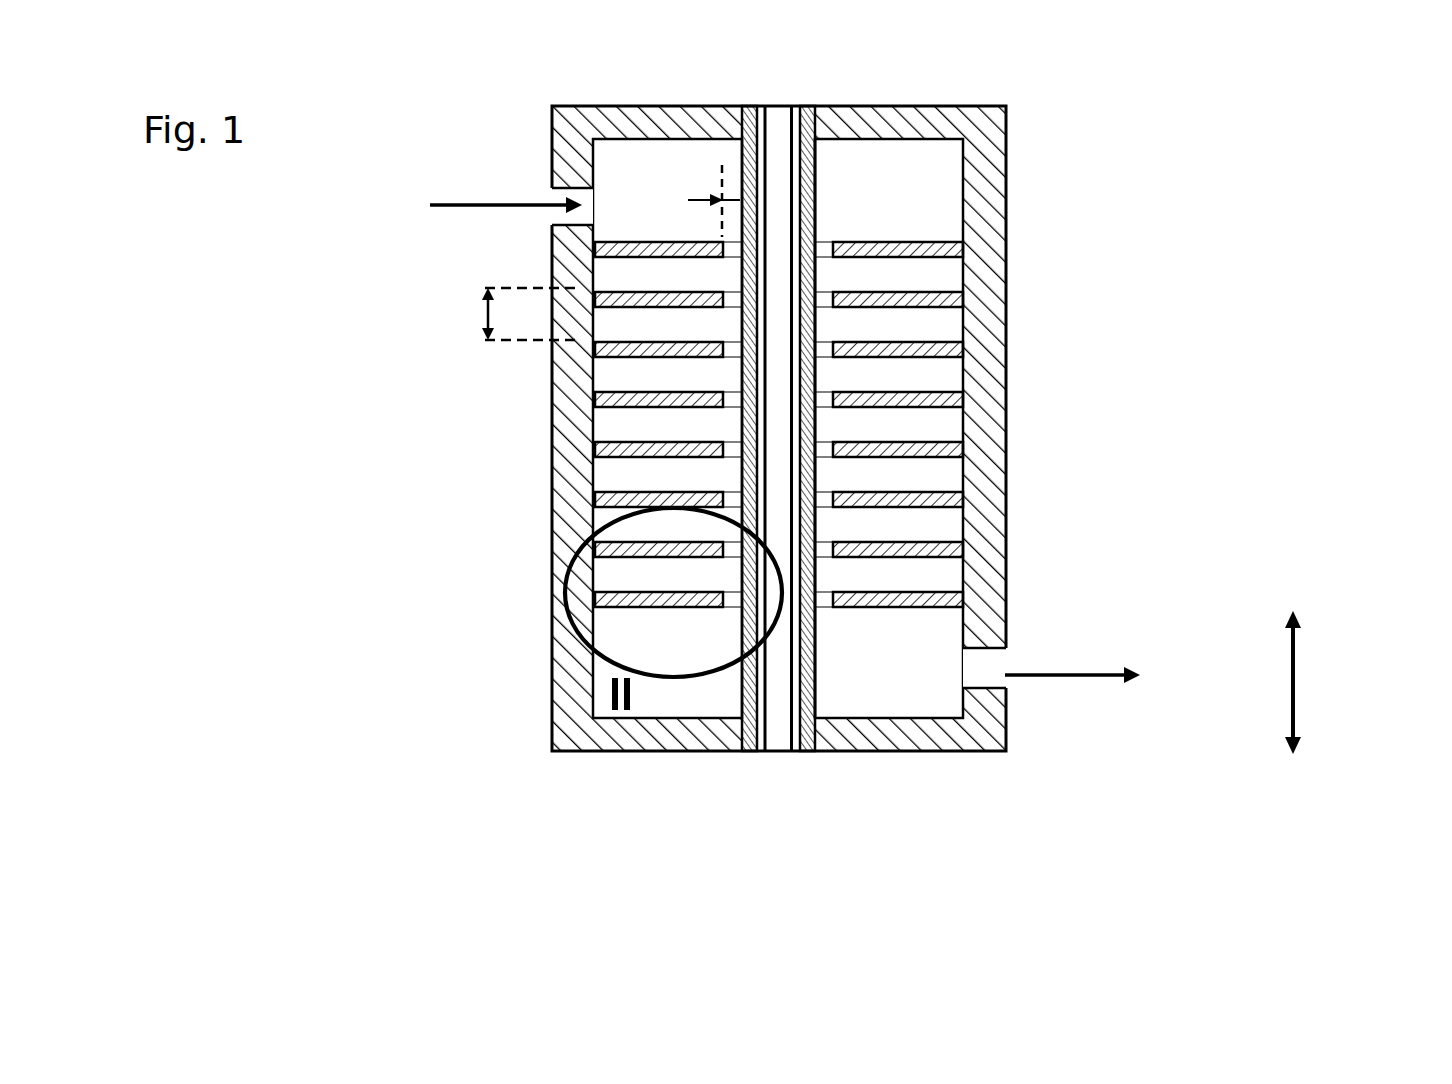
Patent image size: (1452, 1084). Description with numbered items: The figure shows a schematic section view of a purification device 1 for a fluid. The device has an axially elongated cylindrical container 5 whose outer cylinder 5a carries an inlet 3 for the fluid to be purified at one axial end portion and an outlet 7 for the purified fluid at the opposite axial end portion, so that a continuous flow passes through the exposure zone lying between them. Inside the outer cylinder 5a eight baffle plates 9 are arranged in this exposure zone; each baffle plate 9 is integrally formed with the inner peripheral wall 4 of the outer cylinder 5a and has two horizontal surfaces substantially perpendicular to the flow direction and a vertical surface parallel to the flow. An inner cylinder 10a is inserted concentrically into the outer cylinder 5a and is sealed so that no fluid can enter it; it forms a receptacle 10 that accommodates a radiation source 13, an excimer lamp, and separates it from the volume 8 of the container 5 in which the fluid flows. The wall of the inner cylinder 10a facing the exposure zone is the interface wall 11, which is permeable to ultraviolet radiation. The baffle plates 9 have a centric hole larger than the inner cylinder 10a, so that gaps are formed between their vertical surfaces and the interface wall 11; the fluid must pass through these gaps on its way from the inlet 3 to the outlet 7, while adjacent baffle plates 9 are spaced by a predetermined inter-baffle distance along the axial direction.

The purification device 1 is at (898, 443).
The inlet 3 is at (576, 222).
The inner peripheral wall 4 is at (963, 323).
The container 5 is at (990, 222).
The outer cylinder 5a is at (980, 405).
The outlet 7 is at (978, 675).
The volume 8 is at (628, 104).
The baffle plates 9 is at (595, 554).
The receptacle 10 is at (787, 107).
The inner cylinder 10a is at (817, 217).
The interface wall 11 is at (746, 140).
The radiation source 13 is at (783, 705).